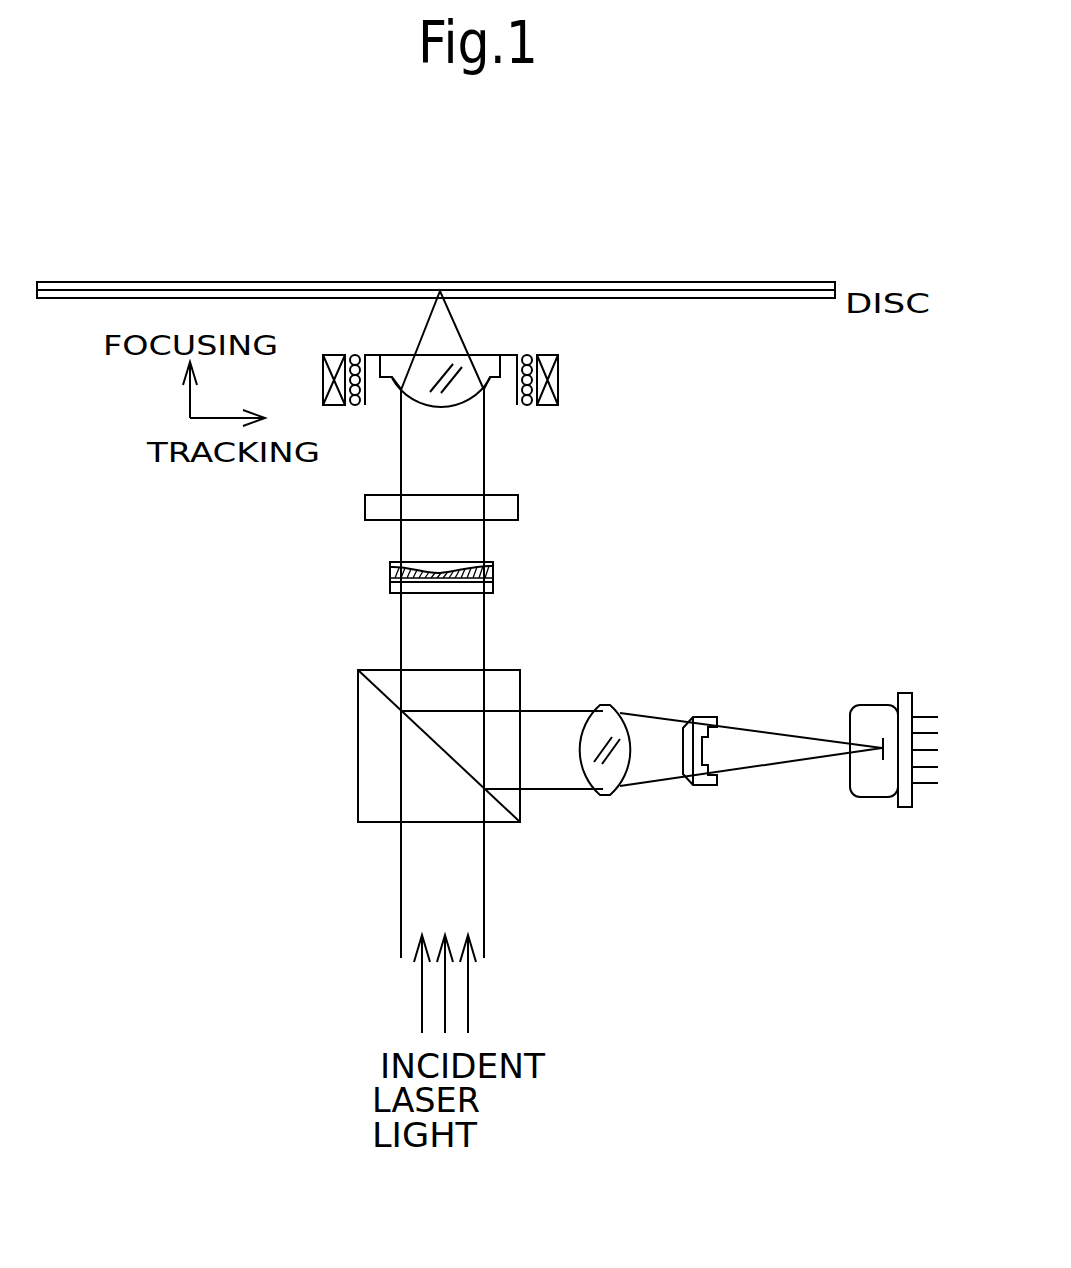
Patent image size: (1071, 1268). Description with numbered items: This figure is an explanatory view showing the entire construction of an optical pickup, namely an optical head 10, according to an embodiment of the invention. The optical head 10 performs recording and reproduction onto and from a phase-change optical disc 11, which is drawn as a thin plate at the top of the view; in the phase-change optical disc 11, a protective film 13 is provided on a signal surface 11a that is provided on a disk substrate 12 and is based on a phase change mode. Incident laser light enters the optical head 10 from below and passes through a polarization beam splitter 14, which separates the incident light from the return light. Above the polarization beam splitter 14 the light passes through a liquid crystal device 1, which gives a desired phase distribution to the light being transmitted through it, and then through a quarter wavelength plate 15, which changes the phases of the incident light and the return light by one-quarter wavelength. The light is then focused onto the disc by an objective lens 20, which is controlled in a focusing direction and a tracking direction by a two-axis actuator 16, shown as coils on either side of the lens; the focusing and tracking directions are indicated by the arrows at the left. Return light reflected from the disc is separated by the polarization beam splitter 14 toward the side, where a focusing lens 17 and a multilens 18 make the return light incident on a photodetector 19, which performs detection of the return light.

The liquid crystal device 1 is at (362, 590).
The optical head 10 is at (269, 855).
The phase-change optical disc 11 is at (577, 281).
The signal surface 11a is at (324, 290).
The disk substrate 12 is at (792, 288).
The protective film 13 is at (800, 299).
The polarization beam splitter 14 is at (368, 714).
The quarter wavelength plate 15 is at (518, 507).
The two-axis actuator 16 is at (558, 380).
The focusing lens 17 is at (611, 796).
The multilens 18 is at (710, 786).
The photodetector 19 is at (866, 708).
The objective lens 20 is at (460, 388).